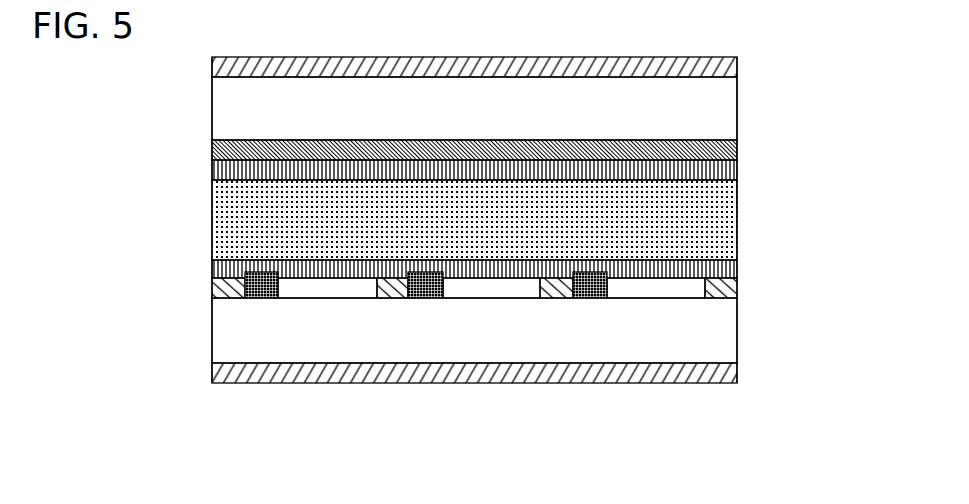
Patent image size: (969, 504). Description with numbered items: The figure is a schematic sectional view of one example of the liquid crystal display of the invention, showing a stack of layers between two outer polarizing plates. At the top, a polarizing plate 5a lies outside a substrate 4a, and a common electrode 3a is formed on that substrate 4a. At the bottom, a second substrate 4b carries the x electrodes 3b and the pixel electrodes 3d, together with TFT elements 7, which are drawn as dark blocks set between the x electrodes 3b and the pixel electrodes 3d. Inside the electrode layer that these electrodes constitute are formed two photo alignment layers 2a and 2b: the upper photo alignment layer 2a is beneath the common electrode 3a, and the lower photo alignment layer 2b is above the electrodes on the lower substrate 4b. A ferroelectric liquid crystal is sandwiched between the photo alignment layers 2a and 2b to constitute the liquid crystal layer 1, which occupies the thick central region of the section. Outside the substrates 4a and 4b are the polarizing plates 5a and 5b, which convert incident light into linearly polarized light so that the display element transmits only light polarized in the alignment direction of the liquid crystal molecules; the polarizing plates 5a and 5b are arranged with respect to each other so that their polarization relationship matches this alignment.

The liquid crystal layer 1 is at (722, 210).
The photo alignment layer 2a is at (612, 170).
The photo alignment layer 2b is at (722, 263).
The common electrode 3a is at (720, 147).
The x electrode 3b is at (560, 282).
The pixel electrode 3d is at (657, 285).
The substrate 4a is at (720, 104).
The substrate 4b is at (722, 328).
The polarizing plate 5a is at (720, 60).
The polarizing plate 5b is at (722, 372).
The TFT element 7 is at (600, 296).